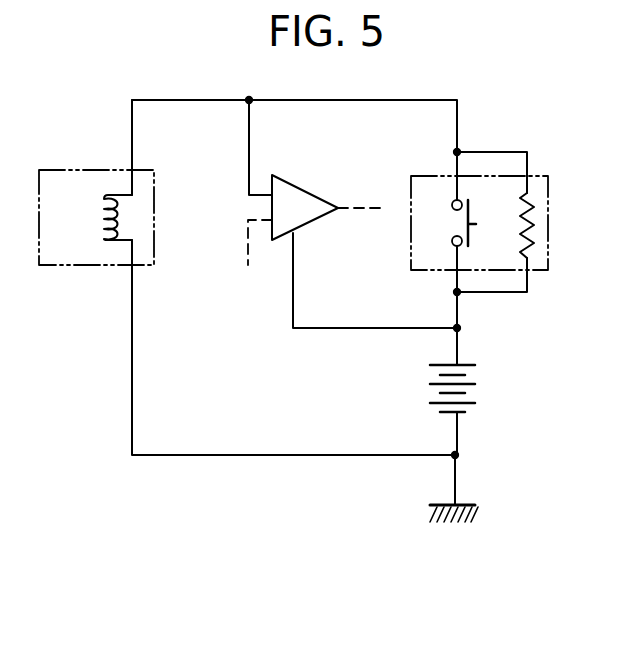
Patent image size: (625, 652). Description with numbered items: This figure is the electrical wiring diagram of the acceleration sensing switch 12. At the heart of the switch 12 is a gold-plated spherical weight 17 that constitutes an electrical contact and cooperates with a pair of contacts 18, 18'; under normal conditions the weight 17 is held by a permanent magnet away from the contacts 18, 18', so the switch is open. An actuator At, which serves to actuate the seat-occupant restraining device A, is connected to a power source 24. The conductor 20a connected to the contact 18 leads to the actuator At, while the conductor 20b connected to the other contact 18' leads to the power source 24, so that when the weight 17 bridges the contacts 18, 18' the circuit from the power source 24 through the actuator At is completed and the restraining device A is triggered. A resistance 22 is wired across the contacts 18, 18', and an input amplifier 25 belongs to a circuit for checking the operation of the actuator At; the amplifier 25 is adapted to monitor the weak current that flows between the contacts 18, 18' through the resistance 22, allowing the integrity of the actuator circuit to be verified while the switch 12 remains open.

The seat-occupant restraining device A is at (96, 170).
The actuator At is at (101, 216).
The input amplifier 25 is at (304, 207).
The conductor 20a is at (459, 133).
The conductor 20b is at (459, 320).
The acceleration sensing switch 12 is at (549, 205).
The contact 18 is at (440, 207).
The contact 18' is at (440, 241).
The spherical weight 17 is at (470, 206).
The resistance 22 is at (528, 256).
The power source 24 is at (478, 389).